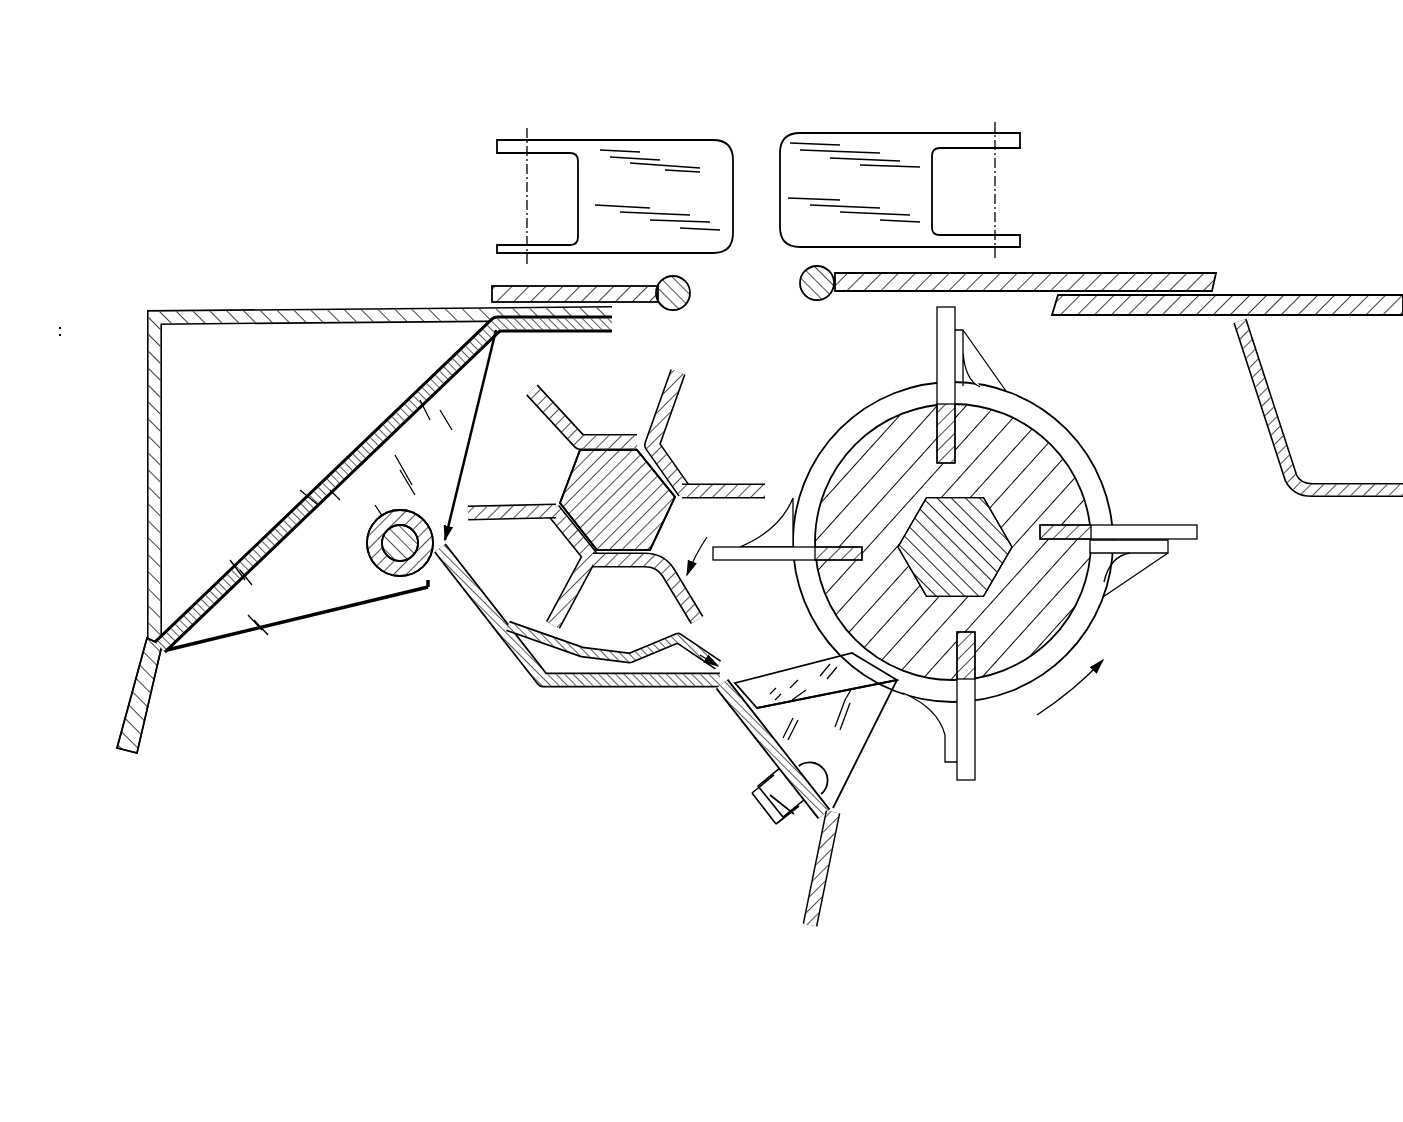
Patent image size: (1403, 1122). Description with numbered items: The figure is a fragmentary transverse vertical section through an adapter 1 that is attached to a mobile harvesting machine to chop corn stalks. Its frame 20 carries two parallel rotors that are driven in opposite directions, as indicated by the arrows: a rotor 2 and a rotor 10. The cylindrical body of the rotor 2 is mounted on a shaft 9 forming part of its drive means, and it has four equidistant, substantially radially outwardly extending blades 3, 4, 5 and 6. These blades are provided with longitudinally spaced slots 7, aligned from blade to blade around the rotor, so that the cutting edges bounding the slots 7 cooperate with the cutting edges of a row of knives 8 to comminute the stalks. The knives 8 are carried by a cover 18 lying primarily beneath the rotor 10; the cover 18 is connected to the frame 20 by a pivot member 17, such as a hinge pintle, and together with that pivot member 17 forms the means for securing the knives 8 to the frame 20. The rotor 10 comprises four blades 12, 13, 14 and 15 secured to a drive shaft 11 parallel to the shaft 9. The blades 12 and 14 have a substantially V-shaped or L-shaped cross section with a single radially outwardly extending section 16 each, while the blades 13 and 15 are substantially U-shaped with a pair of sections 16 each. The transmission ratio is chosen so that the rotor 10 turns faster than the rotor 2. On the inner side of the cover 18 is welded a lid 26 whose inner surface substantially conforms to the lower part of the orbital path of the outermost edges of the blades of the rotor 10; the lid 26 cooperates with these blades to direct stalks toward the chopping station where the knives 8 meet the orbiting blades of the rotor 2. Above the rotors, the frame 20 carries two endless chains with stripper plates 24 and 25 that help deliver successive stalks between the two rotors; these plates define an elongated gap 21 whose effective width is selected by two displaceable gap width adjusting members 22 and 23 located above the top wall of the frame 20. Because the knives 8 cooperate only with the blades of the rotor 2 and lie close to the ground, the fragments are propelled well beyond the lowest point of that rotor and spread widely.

The adapter 1 is at (680, 748).
The rotor 2 is at (1052, 589).
The blade 3 is at (944, 350).
The blade 4 is at (750, 553).
The blade 5 is at (978, 752).
The blade 6 is at (1160, 527).
The slot 7 is at (975, 717).
The knife 8 is at (845, 753).
The shaft 9 is at (1000, 505).
The rotor 10 is at (700, 440).
The drive shaft 11 is at (556, 530).
The blade 12 is at (567, 402).
The blade 13 is at (747, 482).
The blade 14 is at (670, 595).
The blade 15 is at (490, 505).
The radially outwardly extending section 16 is at (680, 393).
The pivot member 17 is at (397, 562).
The cover 18 is at (607, 686).
The frame 20 is at (255, 302).
The gap 21 is at (755, 150).
The gap width adjusting member 22 is at (500, 288).
The gap width adjusting member 23 is at (1127, 280).
The stripper plate 24 is at (703, 148).
The stripper plate 25 is at (897, 143).
The lid 26 is at (545, 687).